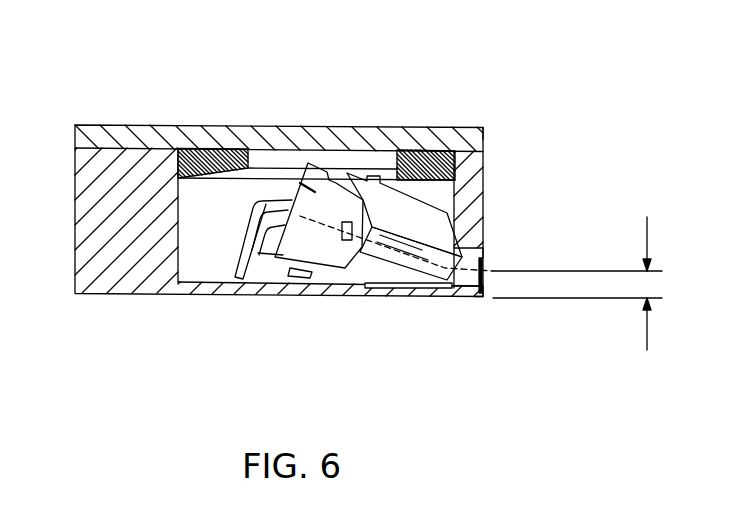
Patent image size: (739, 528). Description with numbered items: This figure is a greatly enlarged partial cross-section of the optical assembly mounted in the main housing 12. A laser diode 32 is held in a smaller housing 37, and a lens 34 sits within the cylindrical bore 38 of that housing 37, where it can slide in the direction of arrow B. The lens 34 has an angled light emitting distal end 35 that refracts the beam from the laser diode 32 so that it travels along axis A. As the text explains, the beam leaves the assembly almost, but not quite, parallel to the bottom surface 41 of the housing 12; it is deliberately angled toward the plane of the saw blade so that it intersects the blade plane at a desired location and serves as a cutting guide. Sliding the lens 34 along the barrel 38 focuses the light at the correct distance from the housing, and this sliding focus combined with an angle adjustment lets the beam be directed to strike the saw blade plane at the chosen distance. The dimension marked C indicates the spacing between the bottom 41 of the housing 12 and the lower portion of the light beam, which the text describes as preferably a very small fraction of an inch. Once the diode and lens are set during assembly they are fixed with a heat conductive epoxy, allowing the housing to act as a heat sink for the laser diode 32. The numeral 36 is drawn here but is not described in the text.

The housing 12 is at (188, 295).
The laser diode 32 is at (304, 194).
The lens 34 is at (364, 285).
The angled light emitting distal end 35 is at (458, 295).
The window element 36 is at (481, 256).
The housing 37 is at (348, 193).
The cylindrical bore 38 is at (383, 190).
The bottom surface 41 is at (482, 297).
The axis A is at (486, 251).
The arrow B is at (487, 133).
The dimension C is at (646, 283).